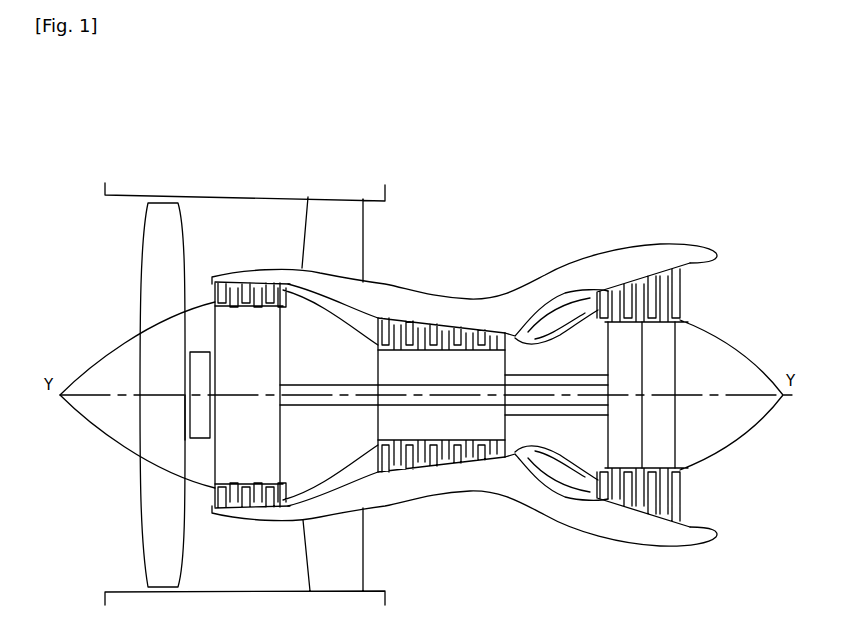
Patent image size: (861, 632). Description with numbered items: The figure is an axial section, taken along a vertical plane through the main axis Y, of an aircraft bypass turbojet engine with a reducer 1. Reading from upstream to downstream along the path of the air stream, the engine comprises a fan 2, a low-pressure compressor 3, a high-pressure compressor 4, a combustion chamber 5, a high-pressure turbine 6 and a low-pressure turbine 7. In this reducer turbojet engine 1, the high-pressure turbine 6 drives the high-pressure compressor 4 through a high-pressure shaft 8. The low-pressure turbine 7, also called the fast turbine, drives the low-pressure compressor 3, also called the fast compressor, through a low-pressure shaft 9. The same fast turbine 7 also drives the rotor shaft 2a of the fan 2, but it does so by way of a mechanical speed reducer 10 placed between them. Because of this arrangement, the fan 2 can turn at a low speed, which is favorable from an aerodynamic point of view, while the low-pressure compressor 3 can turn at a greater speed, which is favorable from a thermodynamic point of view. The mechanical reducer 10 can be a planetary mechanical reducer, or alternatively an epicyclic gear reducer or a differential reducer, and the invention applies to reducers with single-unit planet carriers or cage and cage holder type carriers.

The reducer turbojet engine 1 is at (503, 172).
The fan 2 is at (160, 258).
The rotor shaft 2a is at (185, 412).
The low-pressure compressor 3 is at (250, 275).
The high-pressure compressor 4 is at (420, 318).
The combustion chamber 5 is at (550, 320).
The high-pressure turbine 6 is at (626, 278).
The low-pressure turbine 7 is at (658, 240).
The high-pressure shaft 8 is at (553, 375).
The low-pressure shaft 9 is at (318, 385).
The mechanical speed reducer 10 is at (193, 372).